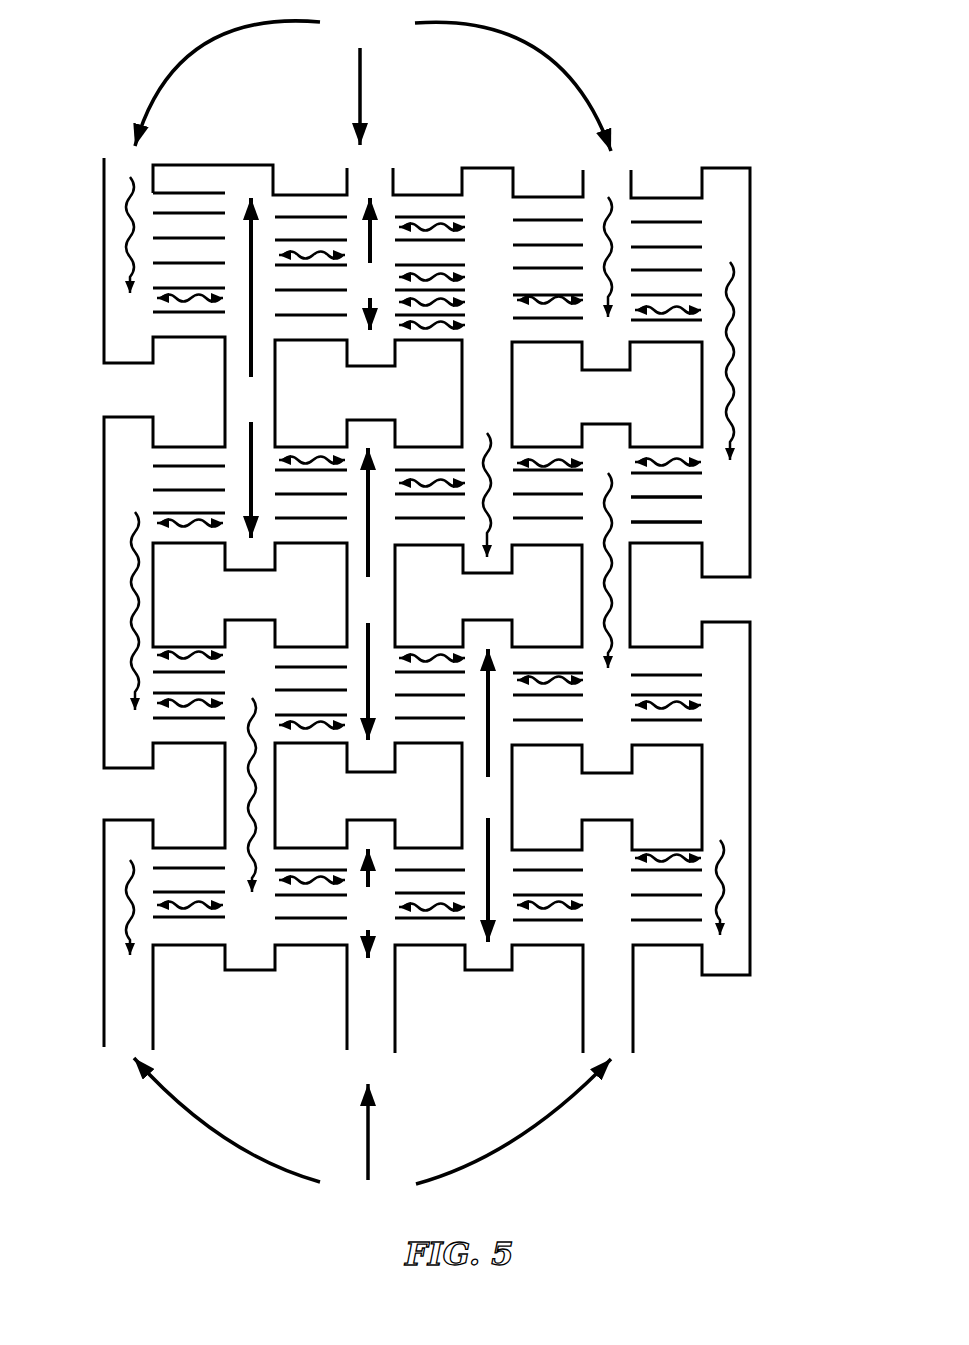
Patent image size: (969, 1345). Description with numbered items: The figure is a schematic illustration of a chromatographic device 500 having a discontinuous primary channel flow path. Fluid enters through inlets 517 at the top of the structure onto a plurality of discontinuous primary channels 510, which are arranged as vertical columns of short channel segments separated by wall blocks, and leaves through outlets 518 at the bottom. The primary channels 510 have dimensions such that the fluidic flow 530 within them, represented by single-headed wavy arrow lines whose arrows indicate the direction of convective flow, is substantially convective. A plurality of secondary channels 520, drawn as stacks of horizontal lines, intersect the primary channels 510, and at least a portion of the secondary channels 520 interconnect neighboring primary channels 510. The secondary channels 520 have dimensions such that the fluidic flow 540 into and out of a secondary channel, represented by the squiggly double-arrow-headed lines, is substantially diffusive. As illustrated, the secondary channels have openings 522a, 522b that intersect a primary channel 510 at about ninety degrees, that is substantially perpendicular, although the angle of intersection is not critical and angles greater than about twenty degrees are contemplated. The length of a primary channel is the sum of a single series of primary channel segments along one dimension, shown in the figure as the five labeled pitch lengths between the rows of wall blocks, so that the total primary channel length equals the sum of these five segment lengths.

The chromatographic device 500 is at (772, 157).
The primary channels 510 is at (148, 331).
The inlets 517 is at (373, 83).
The outlets 518 is at (372, 1137).
The secondary channels 520 is at (198, 272).
The secondary channel opening 522a is at (634, 516).
The secondary channel opening 522b is at (702, 507).
The fluidic flow within primary channel 530 is at (736, 340).
The fluidic flow into and out of secondary channel 540 is at (660, 304).